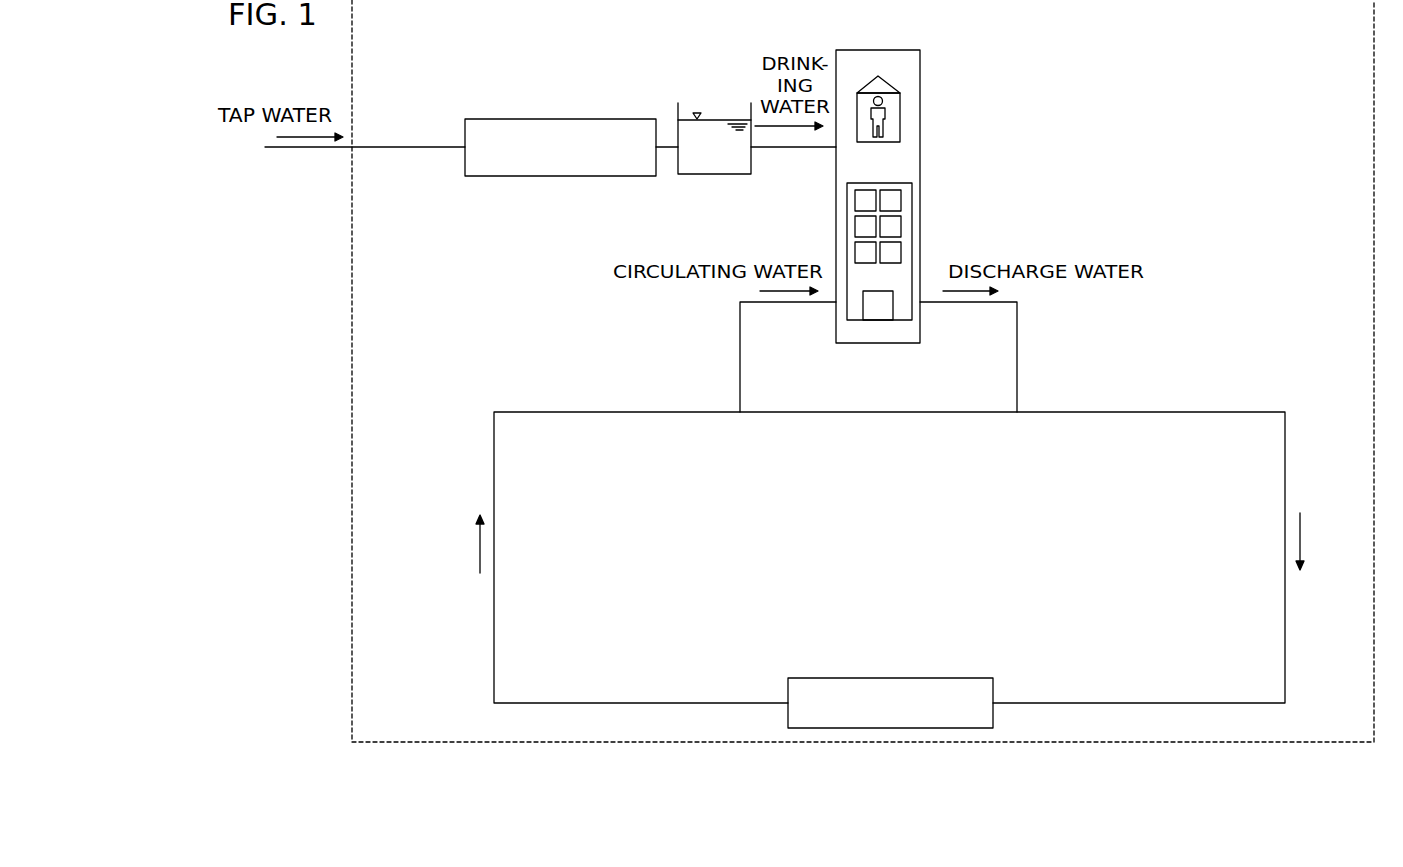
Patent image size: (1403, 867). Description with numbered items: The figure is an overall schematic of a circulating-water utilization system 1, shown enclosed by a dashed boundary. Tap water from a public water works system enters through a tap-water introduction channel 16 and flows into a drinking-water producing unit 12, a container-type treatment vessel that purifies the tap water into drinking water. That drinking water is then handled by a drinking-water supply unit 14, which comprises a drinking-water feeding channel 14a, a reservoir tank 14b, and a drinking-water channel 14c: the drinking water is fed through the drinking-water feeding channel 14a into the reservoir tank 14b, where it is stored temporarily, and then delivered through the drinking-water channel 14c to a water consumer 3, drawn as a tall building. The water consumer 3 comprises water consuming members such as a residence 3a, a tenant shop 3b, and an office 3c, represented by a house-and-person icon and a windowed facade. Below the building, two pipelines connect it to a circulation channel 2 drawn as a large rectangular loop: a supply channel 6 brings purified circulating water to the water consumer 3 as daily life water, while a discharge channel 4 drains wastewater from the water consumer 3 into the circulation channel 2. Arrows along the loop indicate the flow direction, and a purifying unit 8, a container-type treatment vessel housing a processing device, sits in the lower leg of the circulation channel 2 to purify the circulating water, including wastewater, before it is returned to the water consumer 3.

The circulating-water utilization system 1 is at (388, 33).
The circulation channel 2 is at (1212, 411).
The water consumer 3 is at (899, 38).
The residence 3a is at (889, 83).
The tenant shop 3b is at (938, 251).
The office 3c is at (878, 305).
The discharge channel 4 is at (1017, 323).
The supply channel 6 is at (740, 321).
The purifying unit 8 is at (908, 677).
The drinking-water producing unit 12 is at (543, 118).
The drinking-water supply unit 14 is at (711, 86).
The drinking-water feeding channel 14a is at (665, 152).
The reservoir tank 14b is at (693, 176).
The drinking-water channel 14c is at (793, 150).
The tap-water introduction channel 16 is at (413, 150).